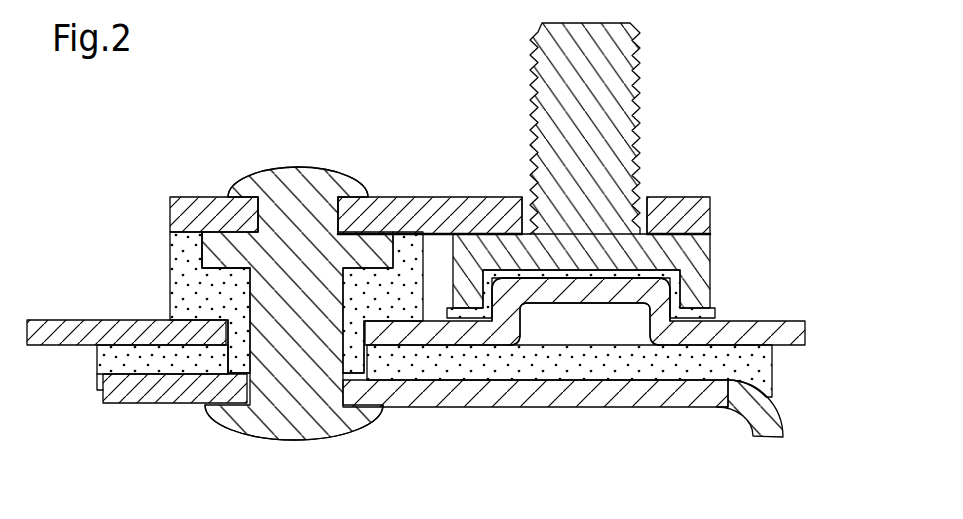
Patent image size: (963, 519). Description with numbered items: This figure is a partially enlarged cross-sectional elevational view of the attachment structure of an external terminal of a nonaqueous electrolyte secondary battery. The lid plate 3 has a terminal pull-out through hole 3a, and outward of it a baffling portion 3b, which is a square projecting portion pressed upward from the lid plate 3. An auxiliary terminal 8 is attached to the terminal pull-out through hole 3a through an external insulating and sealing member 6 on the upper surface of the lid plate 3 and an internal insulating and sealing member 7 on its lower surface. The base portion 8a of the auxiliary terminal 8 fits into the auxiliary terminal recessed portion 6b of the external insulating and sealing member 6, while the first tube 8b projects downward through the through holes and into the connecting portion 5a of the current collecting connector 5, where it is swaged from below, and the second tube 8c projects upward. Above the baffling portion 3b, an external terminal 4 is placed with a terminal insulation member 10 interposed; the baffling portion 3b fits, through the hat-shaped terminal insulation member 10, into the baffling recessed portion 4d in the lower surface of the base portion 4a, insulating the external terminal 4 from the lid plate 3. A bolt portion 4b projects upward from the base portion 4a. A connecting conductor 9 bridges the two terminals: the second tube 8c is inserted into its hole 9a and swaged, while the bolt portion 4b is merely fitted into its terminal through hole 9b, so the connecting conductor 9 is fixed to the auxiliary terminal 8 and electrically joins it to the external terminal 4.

The lid plate 3 is at (62, 330).
The terminal pull-out through hole 3a is at (361, 322).
The baffling portion 3b is at (567, 296).
The external terminal 4 is at (623, 165).
The base portion 4a is at (693, 268).
The bolt portion 4b is at (550, 103).
The baffling recessed portion 4d is at (650, 322).
The current collecting connector 5 is at (736, 404).
The connecting portion 5a is at (168, 393).
The external insulating and sealing member 6 is at (182, 277).
The auxiliary terminal recessed portion 6b is at (216, 230).
The internal insulating and sealing member 7 is at (480, 364).
The auxiliary terminal 8 is at (300, 149).
The base portion 8a is at (212, 257).
The first tube 8b is at (318, 428).
The second tube 8c is at (330, 183).
The connecting conductor 9 is at (433, 216).
The hole 9a is at (266, 195).
The terminal through hole 9b is at (642, 202).
The terminal insulation member 10 is at (716, 313).